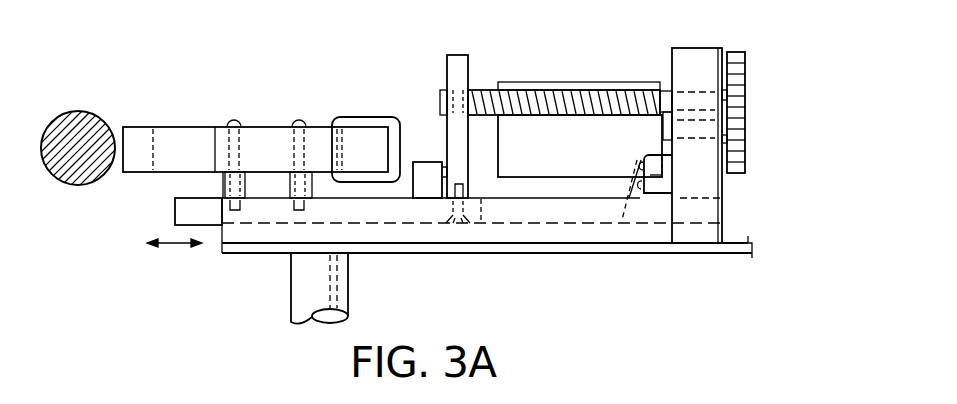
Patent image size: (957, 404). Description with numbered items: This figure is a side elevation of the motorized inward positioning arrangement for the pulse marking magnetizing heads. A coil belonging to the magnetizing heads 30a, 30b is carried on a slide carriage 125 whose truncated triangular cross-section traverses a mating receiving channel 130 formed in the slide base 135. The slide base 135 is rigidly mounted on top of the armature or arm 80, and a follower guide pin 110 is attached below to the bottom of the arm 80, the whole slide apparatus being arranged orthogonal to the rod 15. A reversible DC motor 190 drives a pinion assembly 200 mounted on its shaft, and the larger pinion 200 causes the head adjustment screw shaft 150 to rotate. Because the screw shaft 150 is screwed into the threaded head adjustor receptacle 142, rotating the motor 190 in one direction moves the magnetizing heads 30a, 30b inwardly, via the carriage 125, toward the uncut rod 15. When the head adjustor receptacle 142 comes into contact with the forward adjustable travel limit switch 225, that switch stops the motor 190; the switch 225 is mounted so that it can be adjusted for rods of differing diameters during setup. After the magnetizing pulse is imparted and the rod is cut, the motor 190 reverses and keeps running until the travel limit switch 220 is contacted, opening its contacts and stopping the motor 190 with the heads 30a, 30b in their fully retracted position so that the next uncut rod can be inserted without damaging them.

The rod 15 is at (87, 112).
The magnetizing head 30a is at (261, 133).
The magnetizing head 30b is at (261, 133).
The armature or arm 80 is at (523, 253).
The follower guide pin 110 is at (312, 285).
The slide carriage 125 is at (195, 213).
The receiving channel 130 is at (590, 213).
The slide base 135 is at (370, 233).
The threaded head adjustor receptacle 142 is at (480, 41).
The head adjustment screw shaft 150 is at (562, 88).
The DC motor 190 is at (588, 154).
The pinion assembly 200 is at (725, 124).
The travel limit switch 220 is at (660, 193).
The forward adjustable travel limit switch 225 is at (418, 160).